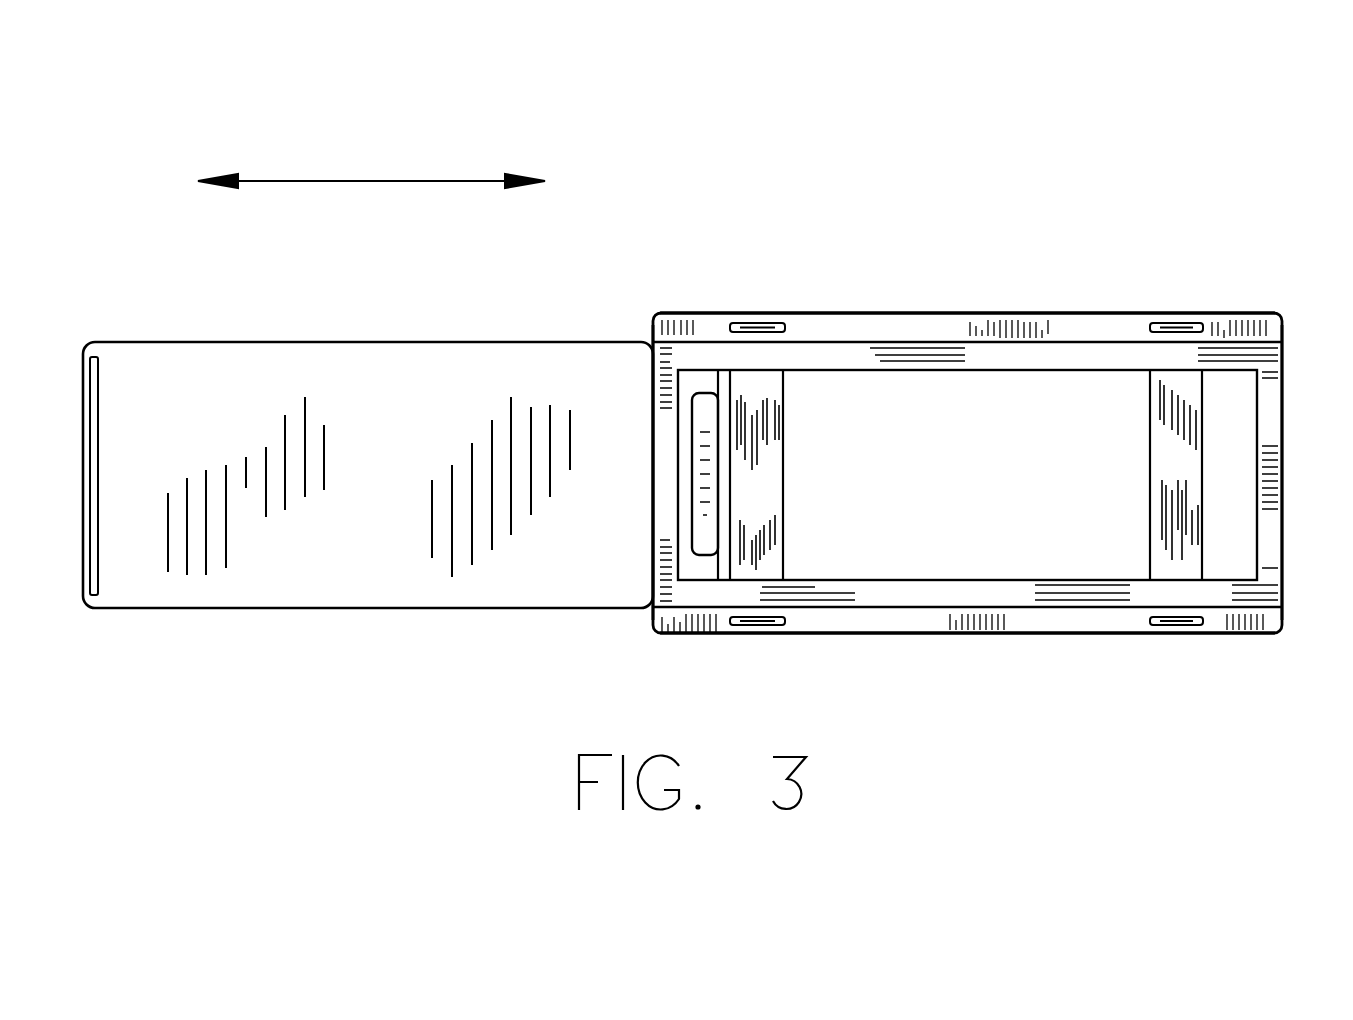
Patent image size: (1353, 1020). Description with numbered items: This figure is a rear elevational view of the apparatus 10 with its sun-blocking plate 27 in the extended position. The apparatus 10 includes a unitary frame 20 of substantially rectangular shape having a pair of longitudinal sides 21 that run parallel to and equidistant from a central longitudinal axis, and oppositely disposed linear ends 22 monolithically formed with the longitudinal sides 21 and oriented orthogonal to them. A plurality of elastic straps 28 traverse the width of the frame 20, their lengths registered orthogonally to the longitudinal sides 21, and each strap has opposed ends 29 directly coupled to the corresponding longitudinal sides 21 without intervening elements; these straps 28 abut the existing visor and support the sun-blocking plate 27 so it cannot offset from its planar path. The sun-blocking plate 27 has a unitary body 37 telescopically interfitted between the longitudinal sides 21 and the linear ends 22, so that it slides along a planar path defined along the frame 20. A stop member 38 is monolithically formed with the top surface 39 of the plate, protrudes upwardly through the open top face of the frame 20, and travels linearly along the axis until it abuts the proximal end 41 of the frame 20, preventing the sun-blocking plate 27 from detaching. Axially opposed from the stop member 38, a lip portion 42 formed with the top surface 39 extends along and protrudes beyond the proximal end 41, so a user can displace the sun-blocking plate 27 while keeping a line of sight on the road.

The apparatus 10 is at (806, 148).
The unitary frame 20 is at (1075, 620).
The longitudinal sides 21 is at (945, 312).
The linear ends 22 is at (1280, 615).
The sun-blocking plate 27 is at (455, 590).
The elastic straps 28 is at (773, 558).
The opposed ends 29 is at (758, 328).
The unitary body 37 is at (375, 605).
The stop member 38 is at (702, 543).
The top surface 39 is at (252, 592).
The proximal end 41 is at (650, 622).
The lip portion 42 is at (100, 605).